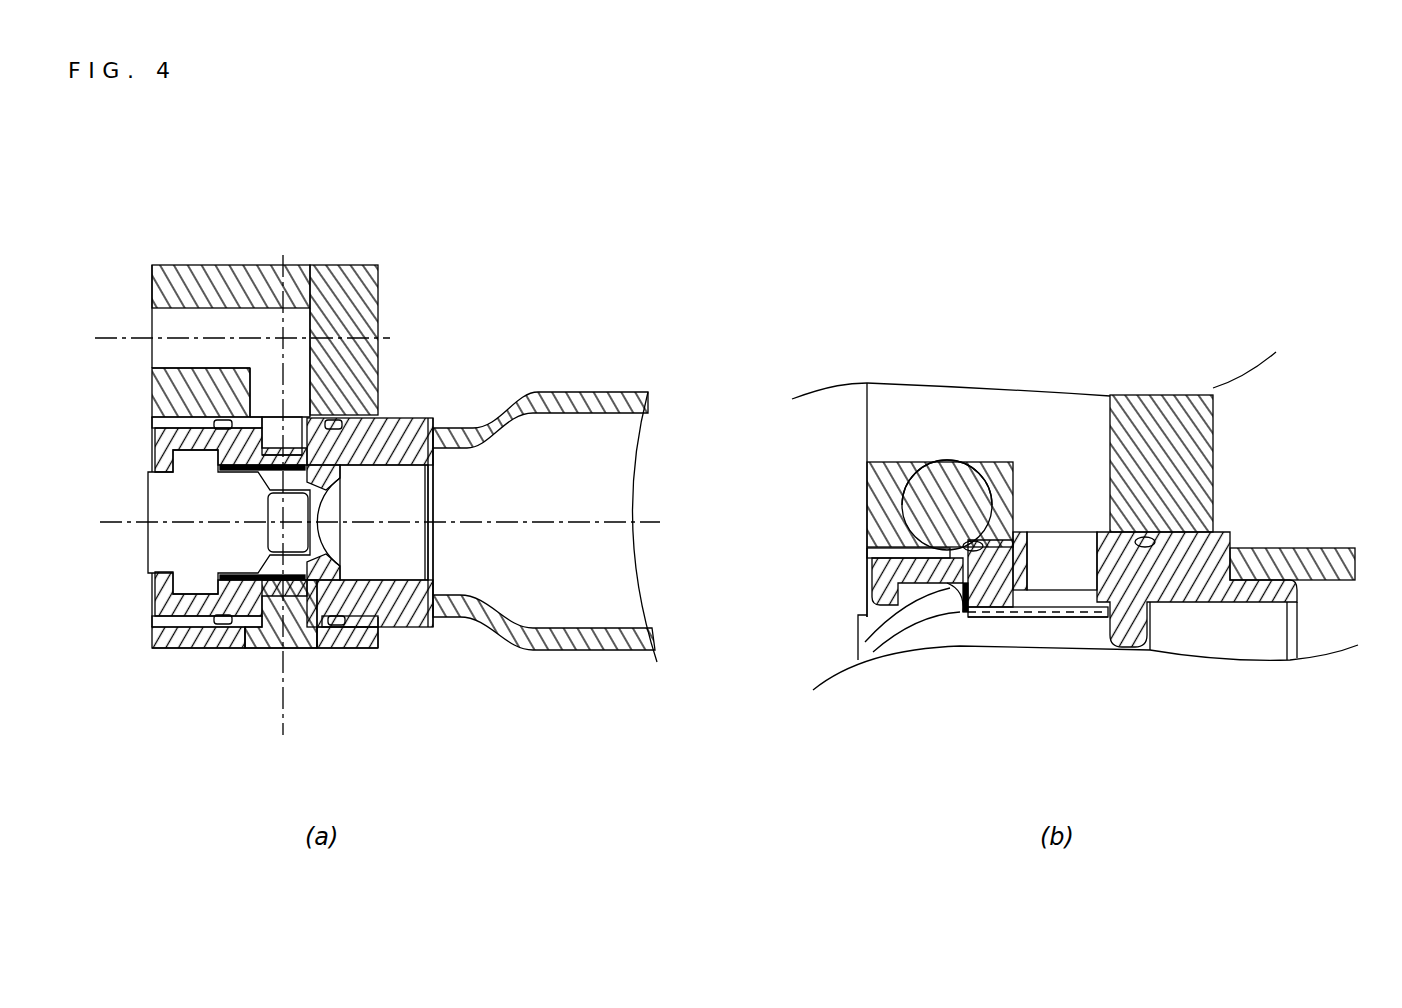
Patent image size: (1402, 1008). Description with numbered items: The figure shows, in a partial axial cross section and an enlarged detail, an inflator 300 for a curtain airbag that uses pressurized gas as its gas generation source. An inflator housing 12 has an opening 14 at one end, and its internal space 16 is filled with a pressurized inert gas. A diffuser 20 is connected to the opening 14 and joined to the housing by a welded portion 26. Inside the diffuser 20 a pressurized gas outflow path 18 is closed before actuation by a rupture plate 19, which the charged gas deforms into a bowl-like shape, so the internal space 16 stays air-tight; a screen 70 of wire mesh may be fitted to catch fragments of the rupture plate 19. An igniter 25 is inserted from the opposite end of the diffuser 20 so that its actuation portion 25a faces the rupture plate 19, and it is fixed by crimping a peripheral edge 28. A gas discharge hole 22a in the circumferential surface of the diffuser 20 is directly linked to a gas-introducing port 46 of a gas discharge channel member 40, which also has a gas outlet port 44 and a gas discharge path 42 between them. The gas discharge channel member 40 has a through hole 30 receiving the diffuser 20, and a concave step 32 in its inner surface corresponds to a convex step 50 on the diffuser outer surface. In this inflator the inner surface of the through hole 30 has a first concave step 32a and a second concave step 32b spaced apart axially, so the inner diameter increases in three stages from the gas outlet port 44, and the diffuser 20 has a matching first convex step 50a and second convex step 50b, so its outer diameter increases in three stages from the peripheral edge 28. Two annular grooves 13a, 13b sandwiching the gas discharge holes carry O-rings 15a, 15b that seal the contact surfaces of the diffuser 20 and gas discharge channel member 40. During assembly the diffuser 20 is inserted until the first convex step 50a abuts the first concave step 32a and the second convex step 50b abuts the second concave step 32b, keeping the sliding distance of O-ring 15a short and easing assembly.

The inflator 300 is at (364, 168).
The inflator housing 12 is at (596, 393).
The annular groove 13a is at (226, 628).
The annular groove 13b is at (343, 630).
The opening 14 is at (433, 565).
The O-ring 15a is at (247, 640).
The O-ring 15b is at (333, 640).
The internal space 16 is at (496, 522).
The pressurized gas outflow path 18 is at (386, 522).
The rupture plate 19 is at (340, 530).
The diffuser 20 is at (385, 410).
The gas discharge hole 22a is at (1055, 561).
The igniter 25 is at (229, 522).
The actuation portion 25a is at (275, 535).
The welded portion 26 is at (395, 628).
The peripheral edge 28 is at (155, 585).
The through hole 30 is at (155, 605).
The concave step 32 is at (172, 447).
The first concave step 32a is at (905, 618).
The second concave step 32b is at (1007, 612).
The gas discharge channel member 40 is at (343, 278).
The gas discharge path 42 is at (220, 320).
The gas outlet port 44 is at (152, 328).
The gas-introducing port 46 is at (281, 505).
The convex step 50 is at (183, 404).
The first convex step 50a is at (902, 505).
The second convex step 50b is at (993, 508).
The screen 70 is at (345, 415).